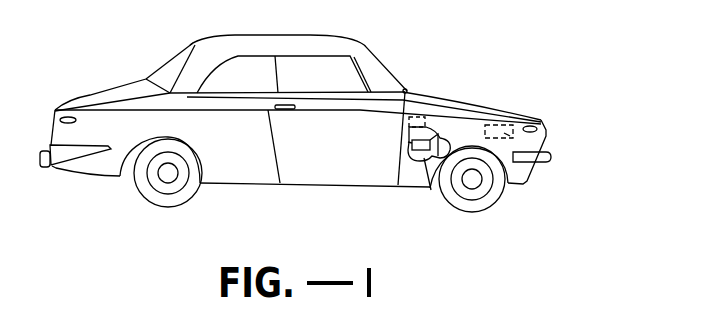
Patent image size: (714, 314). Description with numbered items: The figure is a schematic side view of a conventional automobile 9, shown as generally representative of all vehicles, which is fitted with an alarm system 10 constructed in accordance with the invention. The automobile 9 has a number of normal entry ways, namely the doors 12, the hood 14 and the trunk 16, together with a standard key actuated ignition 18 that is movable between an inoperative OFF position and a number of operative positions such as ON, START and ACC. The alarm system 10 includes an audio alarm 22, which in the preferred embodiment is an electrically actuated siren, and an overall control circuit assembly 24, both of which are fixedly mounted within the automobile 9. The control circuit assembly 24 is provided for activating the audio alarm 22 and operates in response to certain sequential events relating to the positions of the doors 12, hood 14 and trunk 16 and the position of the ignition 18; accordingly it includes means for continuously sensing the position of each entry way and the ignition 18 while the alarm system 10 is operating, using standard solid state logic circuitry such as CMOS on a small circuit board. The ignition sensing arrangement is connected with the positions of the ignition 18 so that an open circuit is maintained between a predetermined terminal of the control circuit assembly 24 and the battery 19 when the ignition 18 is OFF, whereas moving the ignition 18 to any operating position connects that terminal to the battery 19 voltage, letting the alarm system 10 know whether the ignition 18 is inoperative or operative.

The automobile 9 is at (540, 52).
The alarm system 10 is at (417, 163).
The doors 12 is at (292, 173).
The hood 14 is at (472, 102).
The trunk 16 is at (102, 94).
The ignition 18 is at (407, 121).
The battery 19 is at (547, 137).
The audio alarm 22 is at (431, 190).
The control circuit assembly 24 is at (408, 142).